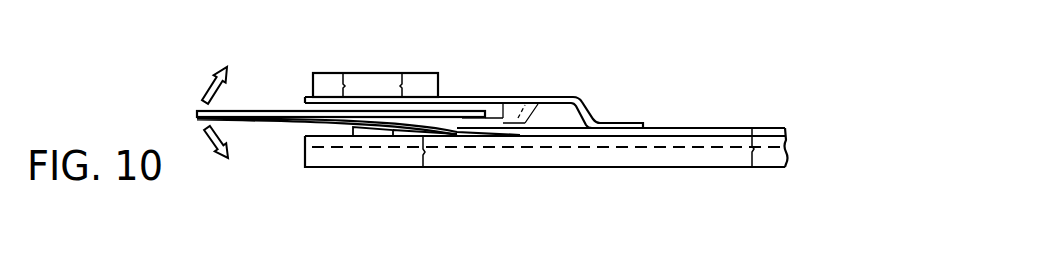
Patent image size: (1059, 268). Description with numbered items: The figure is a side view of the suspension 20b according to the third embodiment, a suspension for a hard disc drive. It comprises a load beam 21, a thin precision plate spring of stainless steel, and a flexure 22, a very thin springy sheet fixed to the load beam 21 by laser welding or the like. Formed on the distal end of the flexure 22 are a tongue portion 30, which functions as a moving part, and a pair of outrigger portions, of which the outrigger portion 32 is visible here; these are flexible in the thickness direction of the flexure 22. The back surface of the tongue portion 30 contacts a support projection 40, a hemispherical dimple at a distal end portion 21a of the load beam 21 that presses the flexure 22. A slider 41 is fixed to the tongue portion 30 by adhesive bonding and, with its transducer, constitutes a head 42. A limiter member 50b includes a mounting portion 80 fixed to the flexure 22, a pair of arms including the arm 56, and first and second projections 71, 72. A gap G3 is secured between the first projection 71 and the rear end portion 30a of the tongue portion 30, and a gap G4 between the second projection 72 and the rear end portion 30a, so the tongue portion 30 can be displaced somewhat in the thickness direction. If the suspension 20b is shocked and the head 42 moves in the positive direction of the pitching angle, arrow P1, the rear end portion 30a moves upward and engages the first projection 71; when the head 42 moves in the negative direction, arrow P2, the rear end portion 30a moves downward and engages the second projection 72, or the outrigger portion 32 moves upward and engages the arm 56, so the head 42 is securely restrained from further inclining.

The suspension 20b is at (757, 122).
The load beam 21 is at (726, 162).
The distal end portion 21a is at (356, 162).
The flexure 22 is at (706, 128).
The tongue portion 30 is at (412, 110).
The rear end portion 30a is at (483, 105).
The outrigger portion 32 is at (313, 137).
The support projection 40 is at (380, 131).
The slider 41 is at (370, 73).
The head 42 is at (304, 69).
The limiter member 50b is at (582, 90).
The arm 56 is at (327, 97).
The first projection 71 is at (469, 97).
The second projection 72 is at (482, 131).
The mounting portion 80 is at (627, 123).
The gap G3 is at (458, 103).
The gap G4 is at (449, 131).
The arrow P1 is at (223, 157).
The arrow P2 is at (221, 72).